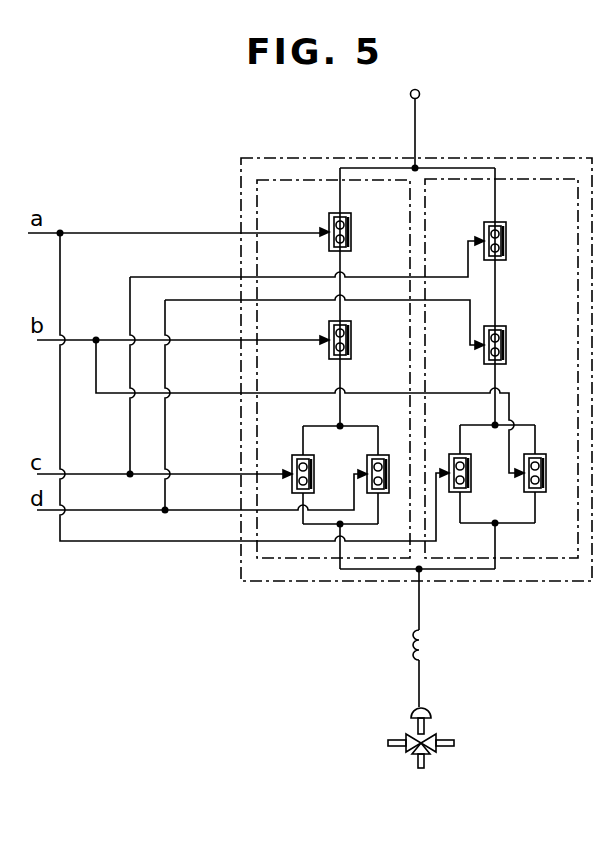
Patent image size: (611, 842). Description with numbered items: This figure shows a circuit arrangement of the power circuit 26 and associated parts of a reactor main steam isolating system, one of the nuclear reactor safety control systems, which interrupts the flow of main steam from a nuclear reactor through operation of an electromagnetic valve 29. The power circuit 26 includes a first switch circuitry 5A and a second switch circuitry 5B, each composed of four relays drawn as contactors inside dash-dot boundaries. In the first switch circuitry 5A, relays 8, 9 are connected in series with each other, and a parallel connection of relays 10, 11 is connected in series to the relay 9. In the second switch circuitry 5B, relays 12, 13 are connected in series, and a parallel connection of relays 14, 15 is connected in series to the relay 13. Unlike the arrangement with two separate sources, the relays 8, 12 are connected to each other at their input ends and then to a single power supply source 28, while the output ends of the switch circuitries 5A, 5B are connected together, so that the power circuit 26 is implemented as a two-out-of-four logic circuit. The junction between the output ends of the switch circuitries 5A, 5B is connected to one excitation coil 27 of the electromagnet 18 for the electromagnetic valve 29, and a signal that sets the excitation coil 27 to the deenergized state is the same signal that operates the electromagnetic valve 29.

The first switch circuitry 5A is at (282, 178).
The second switch circuitry 5B is at (547, 178).
The power circuit 26 is at (345, 158).
The power supply source 28 is at (420, 94).
The relay 8 is at (353, 233).
The relay 9 is at (353, 341).
The relay 10 is at (291, 466).
The relay 11 is at (390, 468).
The relay 12 is at (507, 238).
The relay 13 is at (507, 343).
The relay 14 is at (449, 461).
The relay 15 is at (547, 466).
The excitation coil 27 is at (425, 645).
The electromagnet 18 is at (430, 712).
The electromagnetic valve 29 is at (431, 752).